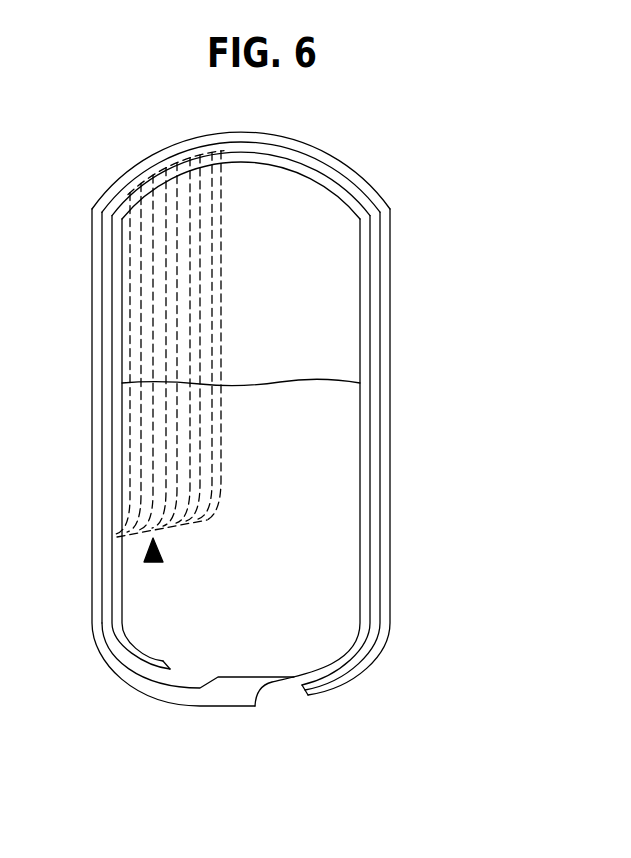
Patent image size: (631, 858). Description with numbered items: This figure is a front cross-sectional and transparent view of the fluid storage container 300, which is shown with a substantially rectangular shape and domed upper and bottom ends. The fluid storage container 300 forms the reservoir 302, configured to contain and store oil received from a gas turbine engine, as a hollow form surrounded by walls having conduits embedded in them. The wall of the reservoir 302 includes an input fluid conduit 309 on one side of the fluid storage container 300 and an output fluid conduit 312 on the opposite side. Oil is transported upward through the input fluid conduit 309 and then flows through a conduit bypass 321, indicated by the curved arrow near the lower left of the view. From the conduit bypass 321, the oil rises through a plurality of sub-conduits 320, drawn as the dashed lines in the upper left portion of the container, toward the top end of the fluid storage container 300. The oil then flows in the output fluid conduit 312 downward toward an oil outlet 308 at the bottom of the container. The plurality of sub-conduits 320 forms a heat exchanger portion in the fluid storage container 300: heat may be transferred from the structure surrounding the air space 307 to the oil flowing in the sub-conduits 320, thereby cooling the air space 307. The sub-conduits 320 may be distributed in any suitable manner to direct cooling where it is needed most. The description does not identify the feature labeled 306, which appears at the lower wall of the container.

The fluid storage container 300 is at (410, 160).
The reservoir 302 is at (378, 327).
The bottom fold 306 is at (183, 677).
The air space 307 is at (293, 228).
The oil outlet 308 is at (282, 692).
The input fluid conduit 309 is at (102, 622).
The output fluid conduit 312 is at (375, 478).
The sub-conduits 320 is at (240, 329).
The conduit bypass 321 is at (156, 562).